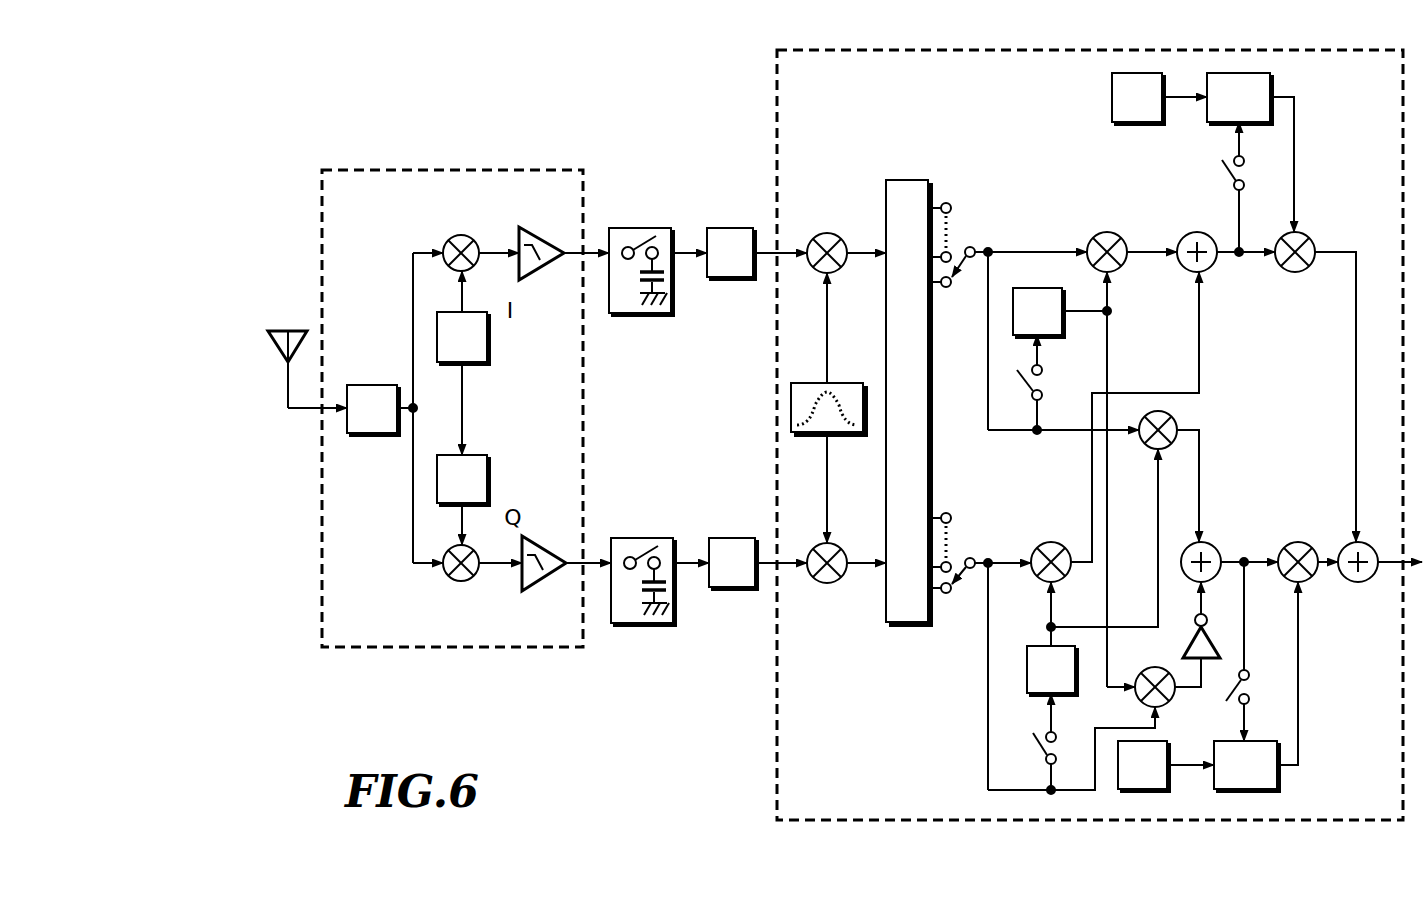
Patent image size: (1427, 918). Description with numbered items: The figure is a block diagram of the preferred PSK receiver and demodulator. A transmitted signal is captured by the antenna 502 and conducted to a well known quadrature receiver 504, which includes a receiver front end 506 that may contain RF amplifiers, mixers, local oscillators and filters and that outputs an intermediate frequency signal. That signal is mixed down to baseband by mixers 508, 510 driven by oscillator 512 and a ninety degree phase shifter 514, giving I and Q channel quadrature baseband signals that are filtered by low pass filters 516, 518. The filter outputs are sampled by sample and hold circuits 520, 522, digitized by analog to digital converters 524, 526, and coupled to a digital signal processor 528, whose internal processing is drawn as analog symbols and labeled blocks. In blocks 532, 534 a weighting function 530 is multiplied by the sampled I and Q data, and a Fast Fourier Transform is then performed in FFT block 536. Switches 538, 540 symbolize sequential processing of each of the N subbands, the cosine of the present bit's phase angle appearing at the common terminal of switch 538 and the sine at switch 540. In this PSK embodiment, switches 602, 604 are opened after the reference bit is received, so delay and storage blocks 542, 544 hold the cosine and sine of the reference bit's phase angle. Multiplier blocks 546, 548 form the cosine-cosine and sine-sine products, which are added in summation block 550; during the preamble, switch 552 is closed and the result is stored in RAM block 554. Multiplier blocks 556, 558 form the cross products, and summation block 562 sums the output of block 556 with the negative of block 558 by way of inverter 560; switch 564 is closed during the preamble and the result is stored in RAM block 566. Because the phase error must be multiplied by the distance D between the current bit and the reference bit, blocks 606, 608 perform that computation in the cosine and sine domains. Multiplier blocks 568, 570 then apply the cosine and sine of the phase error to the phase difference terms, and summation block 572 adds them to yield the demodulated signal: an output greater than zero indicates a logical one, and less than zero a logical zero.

The antenna 502 is at (280, 331).
The quadrature receiver 504 is at (533, 170).
The receiver front end 506 is at (375, 436).
The mixer 508 is at (450, 240).
The mixer 510 is at (472, 581).
The oscillator 512 is at (490, 340).
The 90° phase shifter 514 is at (490, 470).
The low pass filter 516 is at (532, 232).
The low pass filter 518 is at (540, 540).
The sample and hold circuit 520 is at (622, 228).
The sample and hold circuit 522 is at (627, 538).
The analog to digital converter 524 is at (742, 228).
The analog to digital converter 526 is at (743, 538).
The digital signal processor 528 is at (777, 108).
The weighting function 530 is at (840, 383).
The multiplier block 532 is at (843, 266).
The multiplier block 534 is at (845, 578).
The FFT block 536 is at (916, 626).
The switch 538 is at (958, 271).
The switch 540 is at (962, 587).
The delay and storage block 542 is at (1050, 288).
The delay and storage block 544 is at (1073, 696).
The multiplier block 546 is at (1125, 240).
The multiplier block 548 is at (1040, 548).
The summation block 550 is at (1208, 238).
The switch 552 is at (1243, 190).
The RAM block 554 is at (1275, 91).
The multiplier block 556 is at (1150, 446).
The multiplier block 558 is at (1170, 701).
The inverter 560 is at (1188, 641).
The summation block 562 is at (1218, 546).
The switch 564 is at (1250, 674).
The RAM block 566 is at (1280, 773).
The multiplier block 568 is at (1310, 238).
The multiplier block 570 is at (1310, 548).
The summation block 572 is at (1372, 548).
The switch 602 is at (1043, 374).
The switch 604 is at (1038, 741).
The block 606 is at (1162, 106).
The block 608 is at (1167, 773).